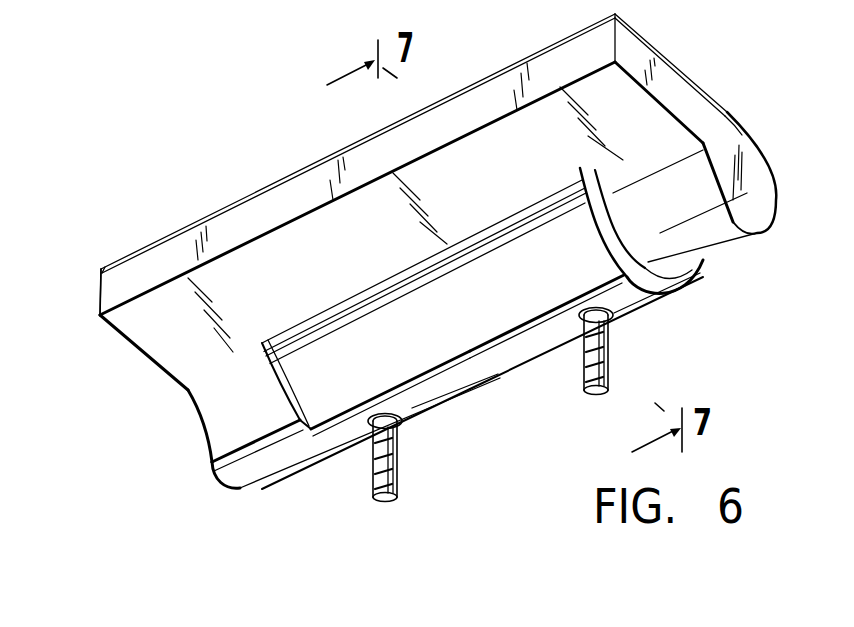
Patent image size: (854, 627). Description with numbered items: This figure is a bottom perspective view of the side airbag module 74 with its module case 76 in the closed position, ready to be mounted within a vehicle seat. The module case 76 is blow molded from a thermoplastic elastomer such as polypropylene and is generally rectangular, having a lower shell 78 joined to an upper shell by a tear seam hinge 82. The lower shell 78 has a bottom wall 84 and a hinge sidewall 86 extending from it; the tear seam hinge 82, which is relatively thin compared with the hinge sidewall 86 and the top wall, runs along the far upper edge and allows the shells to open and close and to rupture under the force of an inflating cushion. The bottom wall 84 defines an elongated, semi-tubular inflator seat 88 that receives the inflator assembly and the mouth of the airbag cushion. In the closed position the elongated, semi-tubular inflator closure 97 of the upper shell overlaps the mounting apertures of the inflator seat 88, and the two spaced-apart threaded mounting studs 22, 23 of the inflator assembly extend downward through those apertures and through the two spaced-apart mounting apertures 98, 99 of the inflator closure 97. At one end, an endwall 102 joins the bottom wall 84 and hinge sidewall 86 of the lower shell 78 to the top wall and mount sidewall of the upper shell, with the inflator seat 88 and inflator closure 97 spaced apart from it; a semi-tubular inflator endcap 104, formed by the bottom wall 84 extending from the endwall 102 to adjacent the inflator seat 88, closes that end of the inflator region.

The side airbag module 74 is at (250, 514).
The module case 76 is at (167, 386).
The lower shell 78 is at (142, 331).
The tear seam hinge 82 is at (320, 157).
The bottom wall 84 is at (120, 321).
The hinge sidewall 86 is at (178, 240).
The inflator seat 88 is at (215, 437).
The inflator closure 97 is at (273, 470).
The mounting aperture 98 is at (578, 320).
The mounting aperture 99 is at (400, 423).
The mounting projection 22 is at (610, 370).
The mounting projection 23 is at (398, 480).
The endwall 102 is at (697, 96).
The inflator endcap 104 is at (725, 247).